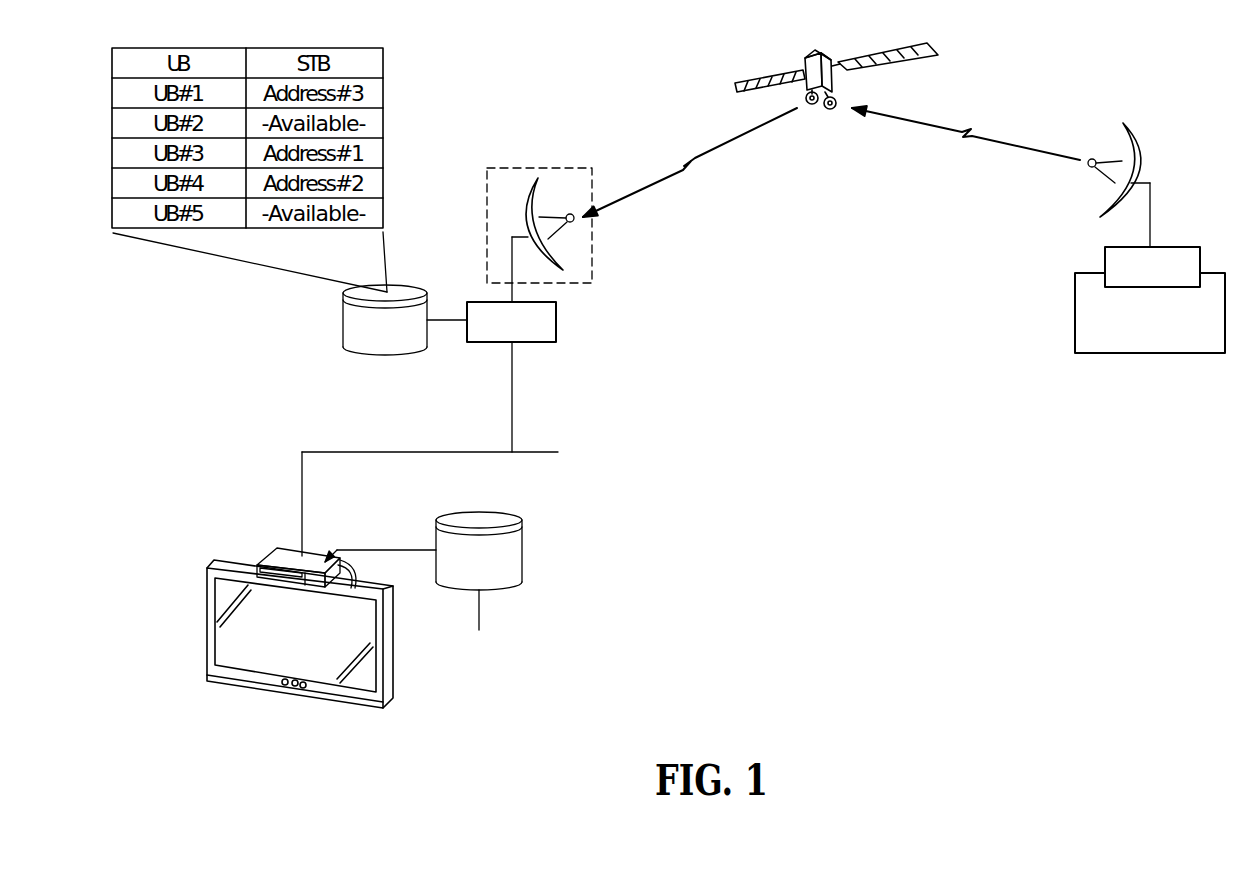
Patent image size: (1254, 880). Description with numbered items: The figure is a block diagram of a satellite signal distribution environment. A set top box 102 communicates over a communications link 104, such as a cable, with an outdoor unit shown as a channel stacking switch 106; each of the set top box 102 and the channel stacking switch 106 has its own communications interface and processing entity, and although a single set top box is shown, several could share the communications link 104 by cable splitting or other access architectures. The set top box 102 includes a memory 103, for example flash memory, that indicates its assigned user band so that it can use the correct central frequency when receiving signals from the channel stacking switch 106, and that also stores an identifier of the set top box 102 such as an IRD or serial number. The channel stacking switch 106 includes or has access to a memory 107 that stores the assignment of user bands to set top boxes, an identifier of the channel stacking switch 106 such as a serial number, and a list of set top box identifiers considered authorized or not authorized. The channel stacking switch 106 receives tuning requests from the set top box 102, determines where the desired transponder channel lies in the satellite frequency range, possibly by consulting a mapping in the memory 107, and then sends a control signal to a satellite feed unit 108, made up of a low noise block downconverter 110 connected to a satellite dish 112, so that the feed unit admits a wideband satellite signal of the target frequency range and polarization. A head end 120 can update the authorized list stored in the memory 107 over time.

The set top box 102 is at (277, 551).
The memory 103 is at (479, 589).
The communications link 104 is at (513, 392).
The channel stacking switch 106 is at (557, 323).
The memory 107 is at (385, 320).
The satellite feed unit 108 is at (537, 201).
The low noise block downconverter 110 is at (556, 235).
The satellite dish 112 is at (541, 191).
The head end 120 is at (1075, 312).